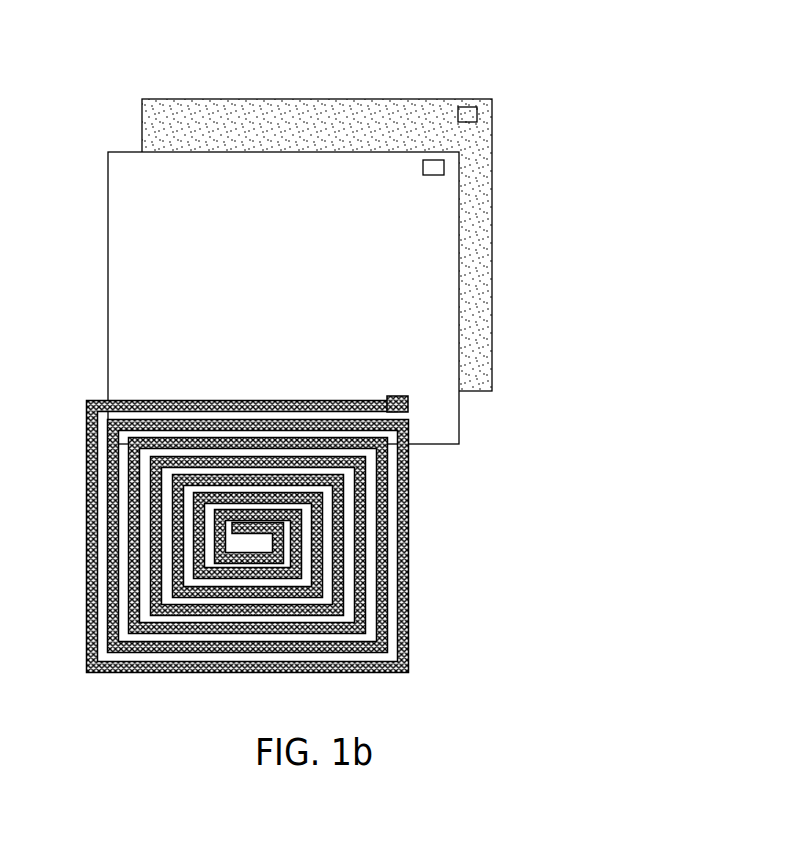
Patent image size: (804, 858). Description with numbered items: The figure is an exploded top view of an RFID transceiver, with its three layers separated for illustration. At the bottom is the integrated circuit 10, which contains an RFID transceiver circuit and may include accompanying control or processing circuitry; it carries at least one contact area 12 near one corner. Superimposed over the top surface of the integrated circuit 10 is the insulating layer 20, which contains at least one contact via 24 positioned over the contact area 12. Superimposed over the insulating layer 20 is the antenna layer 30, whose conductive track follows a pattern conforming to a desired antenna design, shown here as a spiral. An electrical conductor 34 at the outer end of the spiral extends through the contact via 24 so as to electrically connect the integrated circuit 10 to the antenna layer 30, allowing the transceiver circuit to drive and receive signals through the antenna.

The integrated circuit 10 is at (335, 120).
The contact area 12 is at (468, 117).
The insulating layer 20 is at (124, 218).
The contact via 24 is at (437, 168).
The antenna layer 30 is at (86, 429).
The electrical conductor 34 is at (408, 402).